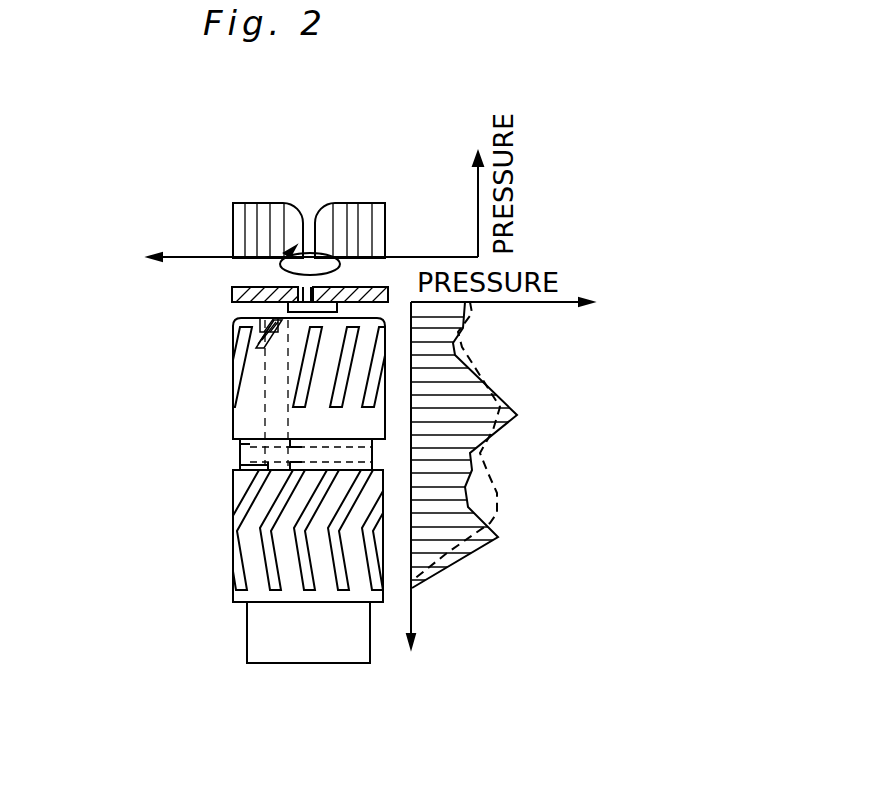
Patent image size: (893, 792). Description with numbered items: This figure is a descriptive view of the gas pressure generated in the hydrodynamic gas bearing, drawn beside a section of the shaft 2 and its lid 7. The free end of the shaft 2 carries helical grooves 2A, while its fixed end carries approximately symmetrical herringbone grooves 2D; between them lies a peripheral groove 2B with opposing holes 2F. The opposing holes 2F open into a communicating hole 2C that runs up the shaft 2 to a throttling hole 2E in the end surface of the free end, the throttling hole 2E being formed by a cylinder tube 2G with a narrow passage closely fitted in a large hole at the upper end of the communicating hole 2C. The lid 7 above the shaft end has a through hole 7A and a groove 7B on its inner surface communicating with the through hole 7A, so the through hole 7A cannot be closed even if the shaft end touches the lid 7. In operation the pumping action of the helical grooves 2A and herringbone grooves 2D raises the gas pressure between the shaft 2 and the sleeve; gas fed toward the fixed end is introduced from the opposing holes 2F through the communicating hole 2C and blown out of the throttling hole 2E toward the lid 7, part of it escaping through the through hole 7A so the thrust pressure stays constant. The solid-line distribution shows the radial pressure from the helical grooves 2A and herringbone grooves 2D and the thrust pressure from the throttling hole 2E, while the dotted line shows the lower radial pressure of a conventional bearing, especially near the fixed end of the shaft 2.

The shaft 2 is at (262, 634).
The helical grooves 2A is at (285, 362).
The peripheral groove 2B is at (307, 440).
The communicating hole 2C is at (265, 405).
The herringbone grooves 2D is at (273, 542).
The throttling hole 2E is at (258, 313).
The opposing holes 2F is at (235, 462).
The cylinder tube 2G is at (255, 343).
The lid 7 is at (243, 278).
The through hole 7A is at (285, 287).
The groove 7B is at (337, 287).